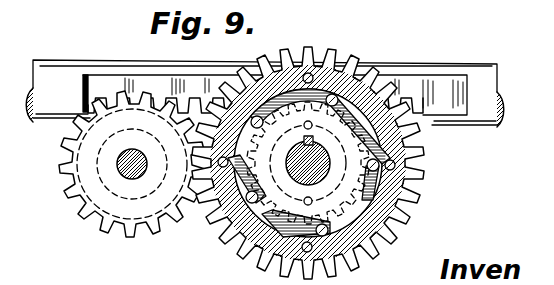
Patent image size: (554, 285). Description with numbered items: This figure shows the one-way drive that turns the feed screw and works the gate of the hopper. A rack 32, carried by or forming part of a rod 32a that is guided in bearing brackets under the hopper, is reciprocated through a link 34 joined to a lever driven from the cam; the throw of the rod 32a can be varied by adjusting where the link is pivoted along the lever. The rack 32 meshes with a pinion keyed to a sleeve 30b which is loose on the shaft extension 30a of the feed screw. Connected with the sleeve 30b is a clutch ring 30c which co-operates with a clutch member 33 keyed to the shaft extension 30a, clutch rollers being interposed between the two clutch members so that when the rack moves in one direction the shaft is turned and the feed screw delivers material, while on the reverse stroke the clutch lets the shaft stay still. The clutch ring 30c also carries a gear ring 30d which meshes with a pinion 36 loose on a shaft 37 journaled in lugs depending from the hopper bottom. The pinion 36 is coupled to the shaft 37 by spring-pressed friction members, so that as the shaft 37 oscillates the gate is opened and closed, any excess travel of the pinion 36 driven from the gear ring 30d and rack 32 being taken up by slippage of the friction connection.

The rack 32 is at (410, 103).
The rod 32a is at (482, 75).
The pinion 36 is at (115, 228).
The shaft 37 is at (126, 170).
The shaft extension 30a is at (320, 168).
The sleeve 30b is at (392, 205).
The clutch ring 30c is at (238, 232).
The gear ring 30d is at (221, 228).
The clutch member 33 is at (376, 221).
The link 34 is at (333, 98).